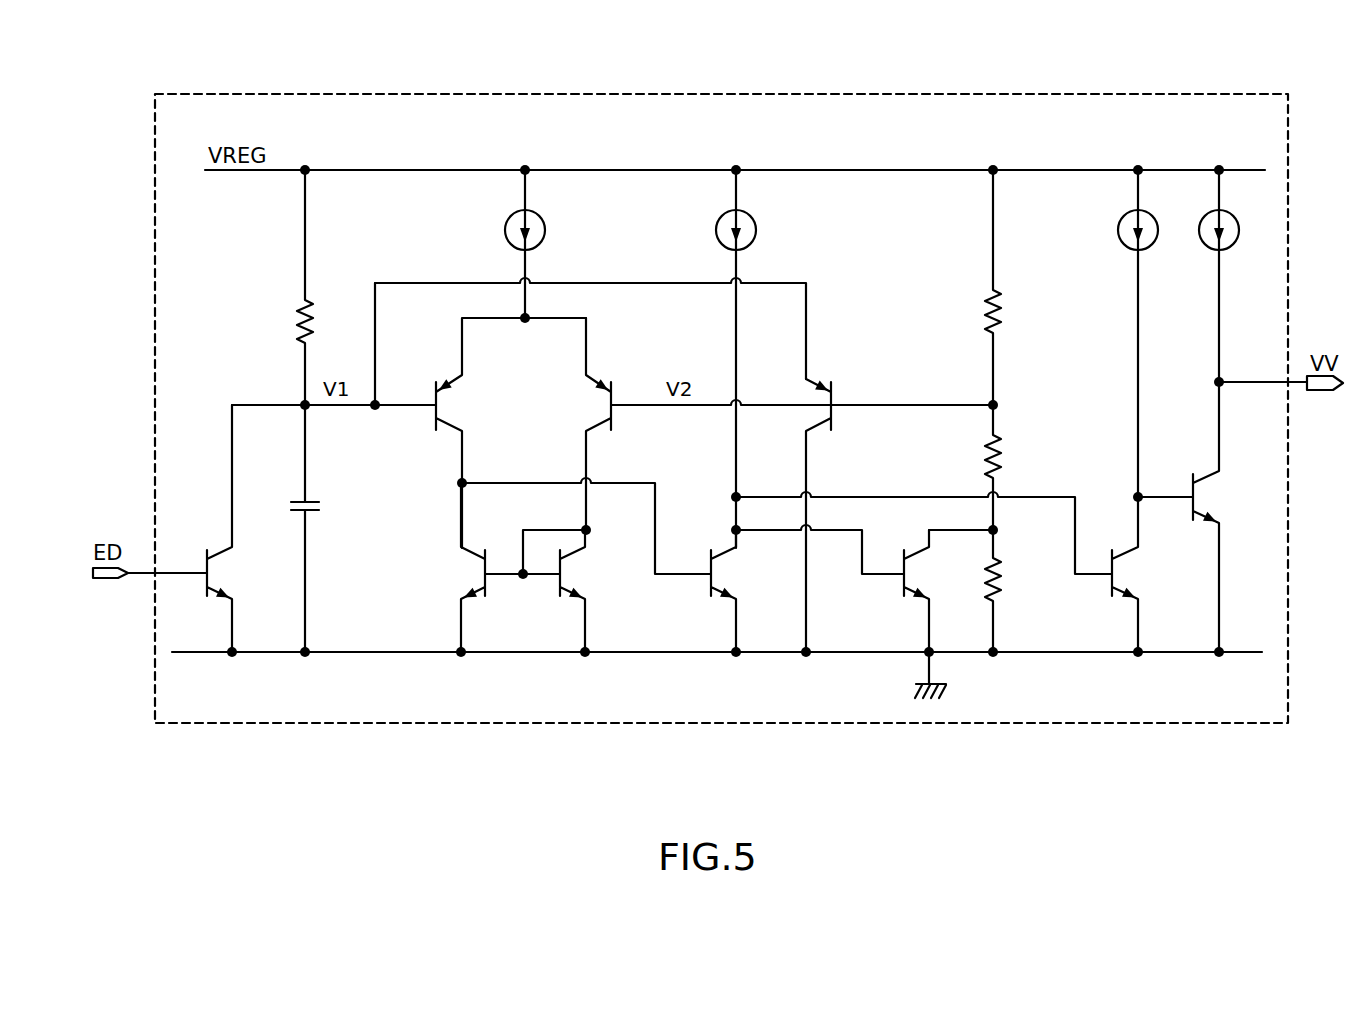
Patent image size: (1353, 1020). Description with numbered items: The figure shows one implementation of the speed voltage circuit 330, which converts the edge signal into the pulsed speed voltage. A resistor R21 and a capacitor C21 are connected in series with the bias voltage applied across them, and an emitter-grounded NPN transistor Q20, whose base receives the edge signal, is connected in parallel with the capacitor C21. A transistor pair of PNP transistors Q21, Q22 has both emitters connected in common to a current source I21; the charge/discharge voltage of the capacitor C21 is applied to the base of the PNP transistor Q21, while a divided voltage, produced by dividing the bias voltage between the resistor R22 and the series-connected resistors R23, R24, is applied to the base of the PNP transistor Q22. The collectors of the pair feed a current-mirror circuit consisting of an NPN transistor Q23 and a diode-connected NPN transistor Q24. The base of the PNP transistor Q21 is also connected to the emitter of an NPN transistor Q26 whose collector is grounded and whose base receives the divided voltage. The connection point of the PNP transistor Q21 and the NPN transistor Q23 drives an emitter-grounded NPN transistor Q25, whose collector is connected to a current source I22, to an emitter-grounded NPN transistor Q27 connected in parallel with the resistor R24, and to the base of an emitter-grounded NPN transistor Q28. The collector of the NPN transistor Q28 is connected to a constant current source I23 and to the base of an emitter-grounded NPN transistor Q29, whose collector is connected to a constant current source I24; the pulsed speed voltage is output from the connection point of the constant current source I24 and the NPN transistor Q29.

The speed voltage circuit 330 is at (1060, 93).
The NPN transistor Q20 is at (242, 528).
The PNP transistor Q21 is at (511, 433).
The PNP transistor Q22 is at (579, 424).
The NPN transistor Q23 is at (455, 567).
The diode-connected NPN transistor Q24 is at (594, 591).
The NPN transistor Q25 is at (746, 591).
The NPN transistor Q26 is at (841, 513).
The NPN transistor Q27 is at (939, 591).
The NPN transistor Q28 is at (1147, 574).
The NPN transistor Q29 is at (1228, 517).
The resistor R21 is at (329, 287).
The resistor R22 is at (1017, 287).
The resistor R23 is at (1017, 467).
The resistor R24 is at (1017, 591).
The capacitor C21 is at (326, 528).
The current source I21 is at (542, 244).
The current source I22 is at (753, 359).
The constant current source I23 is at (1155, 333).
The constant current source I24 is at (1236, 276).